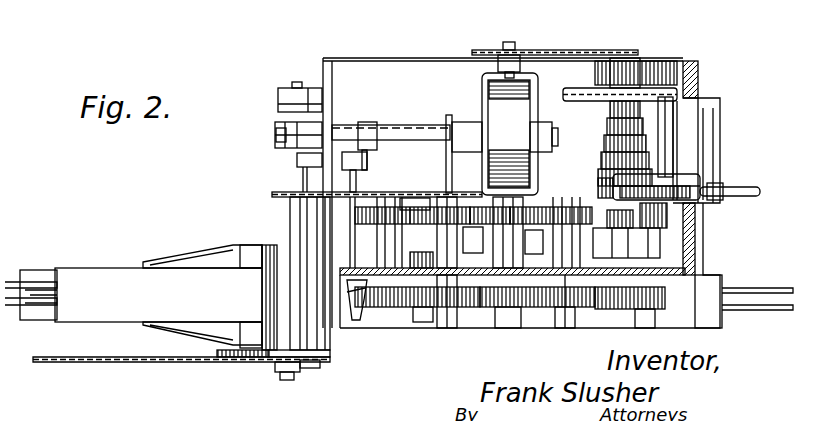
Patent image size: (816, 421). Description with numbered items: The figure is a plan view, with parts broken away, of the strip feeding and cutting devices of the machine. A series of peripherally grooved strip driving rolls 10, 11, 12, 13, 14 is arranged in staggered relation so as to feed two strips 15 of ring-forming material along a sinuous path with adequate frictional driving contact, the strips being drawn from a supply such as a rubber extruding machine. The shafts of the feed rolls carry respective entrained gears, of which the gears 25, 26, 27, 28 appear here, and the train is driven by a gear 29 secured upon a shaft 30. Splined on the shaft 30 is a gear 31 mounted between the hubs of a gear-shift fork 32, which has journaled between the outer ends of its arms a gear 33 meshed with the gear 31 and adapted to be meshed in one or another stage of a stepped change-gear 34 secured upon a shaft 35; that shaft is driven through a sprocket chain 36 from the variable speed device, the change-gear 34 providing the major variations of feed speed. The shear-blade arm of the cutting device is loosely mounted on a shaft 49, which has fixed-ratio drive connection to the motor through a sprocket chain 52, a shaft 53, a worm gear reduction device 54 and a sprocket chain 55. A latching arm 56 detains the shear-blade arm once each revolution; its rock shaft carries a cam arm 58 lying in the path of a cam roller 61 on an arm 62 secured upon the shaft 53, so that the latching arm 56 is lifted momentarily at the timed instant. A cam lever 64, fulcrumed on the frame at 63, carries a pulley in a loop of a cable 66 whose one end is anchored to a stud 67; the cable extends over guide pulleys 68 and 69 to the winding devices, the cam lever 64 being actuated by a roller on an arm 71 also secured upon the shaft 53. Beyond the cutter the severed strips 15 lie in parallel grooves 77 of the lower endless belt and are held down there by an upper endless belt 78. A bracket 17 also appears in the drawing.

The strip driving roll 10 is at (648, 309).
The strip driving roll 11 is at (580, 307).
The strip driving roll 12 is at (530, 307).
The strip driving roll 13 is at (470, 307).
The strip driving roll 14 is at (398, 307).
The strip 15 is at (757, 288).
The bracket 17 is at (380, 322).
The entrained gear 25 is at (550, 212).
The entrained gear 26 is at (523, 239).
The entrained gear 27 is at (458, 205).
The entrained gear 28 is at (370, 224).
The gear 29 is at (667, 218).
The shaft 30 is at (673, 135).
The gear 31 is at (708, 190).
The gear-shift fork 32 is at (680, 178).
The gear 33 is at (598, 188).
The change-gear 34 is at (604, 145).
The shaft 35 is at (637, 61).
The sprocket chain 36 is at (583, 90).
The shaft 49 is at (398, 233).
The sprocket chain 52 is at (446, 160).
The shaft 53 is at (400, 127).
The worm gear reduction device 54 is at (500, 101).
The sprocket chain 55 is at (537, 50).
The latching arm 56 is at (295, 288).
The cam arm 58 is at (356, 185).
The cam roller 61 is at (350, 155).
The arm 62 is at (366, 130).
The fulcrum 63 is at (278, 100).
The cam lever 64 is at (275, 118).
The cable 66 is at (115, 362).
The stud 67 is at (298, 159).
The guide pulley 68 is at (312, 368).
The guide pulley 69 is at (278, 372).
The arm 71 is at (290, 140).
The groove 77 is at (45, 283).
The upper endless belt 78 is at (166, 297).